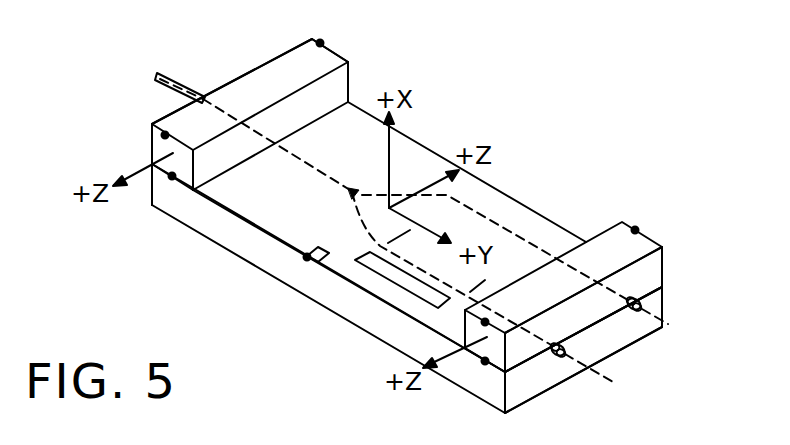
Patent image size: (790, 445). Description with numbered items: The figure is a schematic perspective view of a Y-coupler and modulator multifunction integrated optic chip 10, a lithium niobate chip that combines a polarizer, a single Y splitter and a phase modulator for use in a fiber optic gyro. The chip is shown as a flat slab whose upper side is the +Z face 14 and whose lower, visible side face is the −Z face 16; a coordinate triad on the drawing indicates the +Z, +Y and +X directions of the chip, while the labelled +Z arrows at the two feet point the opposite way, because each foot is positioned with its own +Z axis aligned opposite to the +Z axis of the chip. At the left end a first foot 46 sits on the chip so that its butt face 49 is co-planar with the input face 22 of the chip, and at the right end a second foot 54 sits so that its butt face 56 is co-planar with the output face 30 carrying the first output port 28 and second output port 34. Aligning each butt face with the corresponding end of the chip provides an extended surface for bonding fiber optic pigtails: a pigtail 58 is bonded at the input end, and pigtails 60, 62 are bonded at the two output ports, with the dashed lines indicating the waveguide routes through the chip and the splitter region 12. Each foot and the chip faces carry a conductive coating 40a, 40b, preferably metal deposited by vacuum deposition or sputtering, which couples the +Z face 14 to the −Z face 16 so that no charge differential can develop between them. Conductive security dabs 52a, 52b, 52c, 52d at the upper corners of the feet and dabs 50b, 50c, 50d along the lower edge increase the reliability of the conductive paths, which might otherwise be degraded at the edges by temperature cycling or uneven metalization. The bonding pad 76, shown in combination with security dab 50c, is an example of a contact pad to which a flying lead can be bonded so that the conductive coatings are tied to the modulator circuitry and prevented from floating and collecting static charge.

The optical chip 10 is at (487, 121).
The substrate 12 is at (311, 232).
The +Z face 14 is at (500, 188).
The −Z face 16 is at (269, 256).
The input face 22 is at (152, 190).
The first output port 28 is at (557, 355).
The output face 30 is at (599, 345).
The second output port 34 is at (642, 300).
The conductive path 40a is at (252, 94).
The conductive path 40b is at (586, 266).
The first foot 46 is at (350, 62).
The butt face of first foot 49 is at (280, 55).
The conductive security dab 50b is at (172, 178).
The conductive security dab 50c is at (307, 258).
The conductive security dab 50d is at (485, 363).
The conductive security dab 52a is at (322, 42).
The conductive security dab 52b is at (163, 135).
The conductive security dab 52c is at (636, 229).
The conductive security dab 52d is at (486, 321).
The second foot 54 is at (662, 246).
The butt face of second foot 56 is at (574, 317).
The fiber optic pigtail 58 is at (172, 76).
The fiber optic pigtail 60 is at (567, 352).
The fiber optic pigtail 62 is at (645, 304).
The bonding pad 76 is at (318, 247).